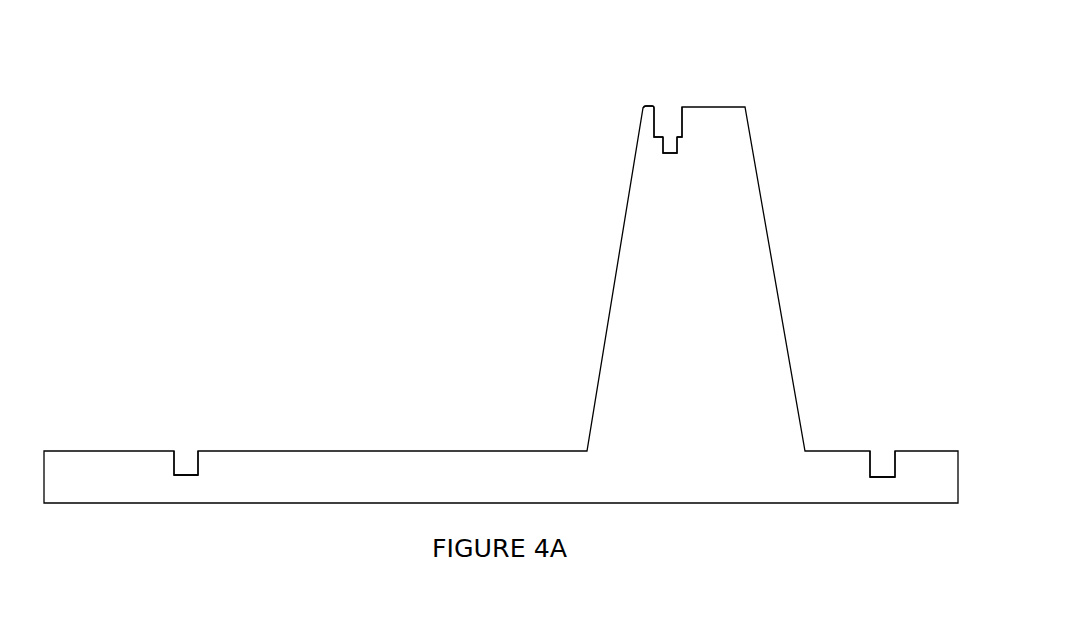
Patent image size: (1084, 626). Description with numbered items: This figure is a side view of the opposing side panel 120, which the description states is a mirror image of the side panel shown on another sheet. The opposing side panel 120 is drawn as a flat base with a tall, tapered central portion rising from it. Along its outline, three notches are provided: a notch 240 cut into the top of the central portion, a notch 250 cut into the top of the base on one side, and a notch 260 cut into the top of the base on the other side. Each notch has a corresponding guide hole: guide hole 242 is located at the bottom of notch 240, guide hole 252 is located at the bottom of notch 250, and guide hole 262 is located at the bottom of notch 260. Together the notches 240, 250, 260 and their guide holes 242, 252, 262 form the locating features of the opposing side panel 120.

The opposing side panel 120 is at (755, 370).
The notch 240 is at (670, 118).
The guide hole 242 is at (668, 148).
The notch 250 is at (883, 460).
The guide hole 252 is at (886, 478).
The notch 260 is at (187, 458).
The guide hole 262 is at (186, 476).